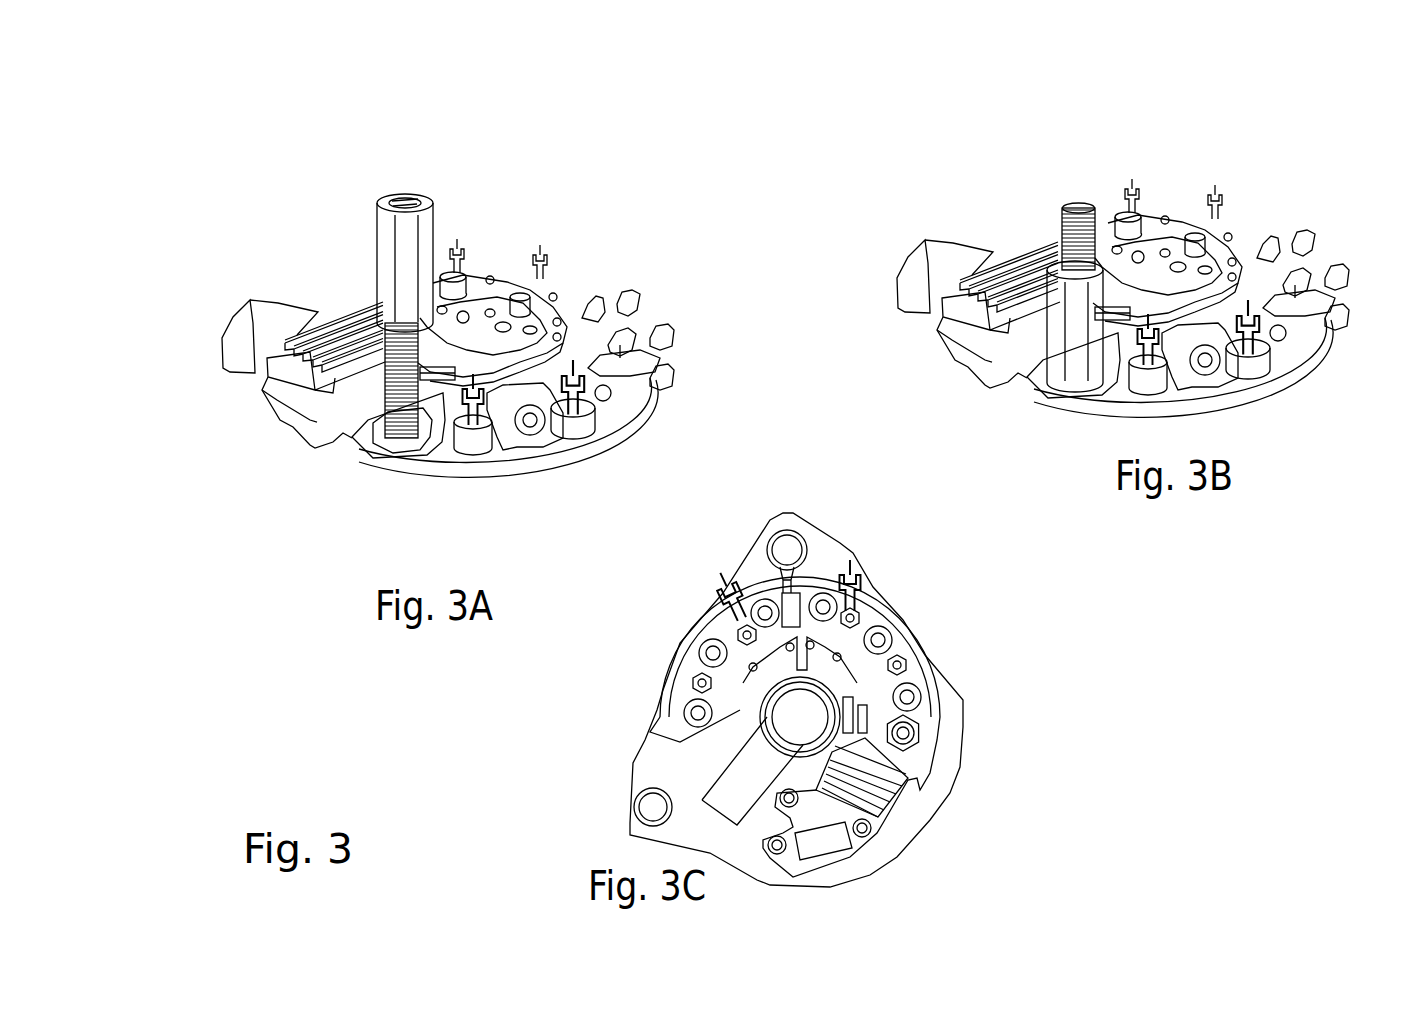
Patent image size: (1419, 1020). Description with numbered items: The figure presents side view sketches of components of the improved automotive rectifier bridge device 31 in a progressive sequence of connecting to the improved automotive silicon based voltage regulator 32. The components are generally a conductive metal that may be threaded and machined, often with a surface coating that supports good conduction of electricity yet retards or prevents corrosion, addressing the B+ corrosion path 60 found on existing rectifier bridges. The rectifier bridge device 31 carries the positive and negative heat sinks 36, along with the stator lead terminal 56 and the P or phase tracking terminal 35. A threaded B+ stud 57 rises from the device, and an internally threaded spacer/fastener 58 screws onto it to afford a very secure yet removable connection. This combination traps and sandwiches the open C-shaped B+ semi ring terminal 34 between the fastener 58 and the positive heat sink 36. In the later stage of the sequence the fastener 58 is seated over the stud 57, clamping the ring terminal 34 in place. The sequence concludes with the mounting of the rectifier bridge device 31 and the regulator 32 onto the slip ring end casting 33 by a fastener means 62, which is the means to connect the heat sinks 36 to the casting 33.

In FIG. 3A, the improved automotive rectifier bridge device 31 is at (280, 503).
In FIG. 3B, the improved automotive rectifier bridge device 31 is at (1226, 418).
In FIG. 3C, the improved automotive rectifier bridge device 31 is at (872, 613).
In FIG. 3A, the improved automotive silicon based voltage regulator 32 is at (280, 393).
In FIG. 3B, the improved automotive silicon based voltage regulator 32 is at (940, 314).
In FIG. 3C, the improved automotive silicon based voltage regulator 32 is at (905, 830).
In FIG. 3C, the slip ring end casting 33 is at (930, 655).
In FIG. 3A, the B+ semi ring terminal 34 is at (392, 443).
In FIG. 3B, the B+ semi ring terminal 34 is at (1057, 434).
In FIG. 3C, the B+ semi ring terminal 34 is at (903, 733).
In FIG. 3A, the P or phase tracking terminal 35 is at (455, 415).
In FIG. 3A, the positive and negative heat sinks 36 is at (495, 470).
In FIG. 3B, the positive and negative heat sinks 36 is at (1183, 408).
In FIG. 3A, the stator lead terminal 56 is at (632, 290).
In FIG. 3A, the B+ stud/fastener on improved regulator 57 is at (373, 435).
In FIG. 3B, the B+ stud/fastener on improved regulator 57 is at (1034, 202).
In FIG. 3C, the B+ stud/fastener on improved regulator 57 is at (920, 733).
In FIG. 3A, the B+ fastener on improved regulator 58 is at (385, 238).
In FIG. 3B, the B+ fastener on improved regulator 58 is at (1029, 352).
In FIG. 3C, the B+ fastener on improved regulator 58 is at (903, 733).
In FIG. 3B, the B+ corrosion path on existing rectifier bridges 60 is at (1243, 426).
In FIG. 3C, the means to connect heat sinks to SRE casting 62 is at (700, 680).